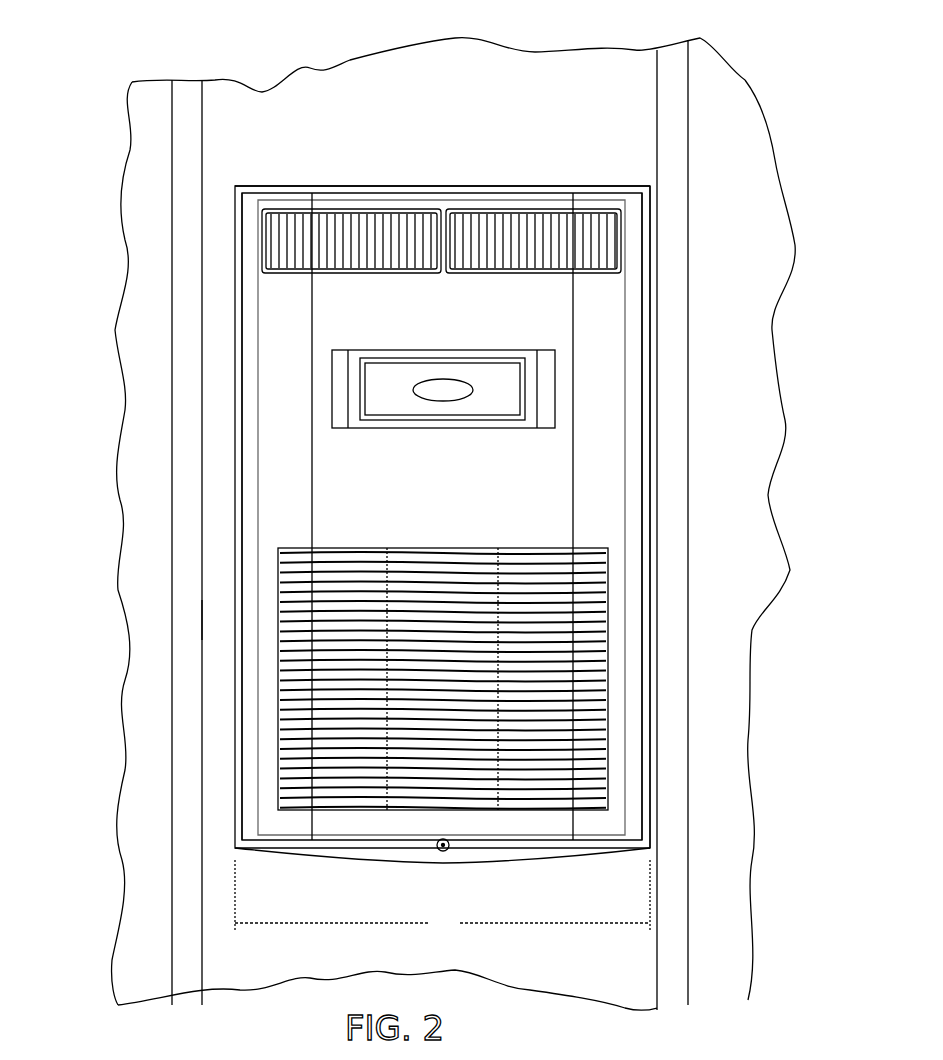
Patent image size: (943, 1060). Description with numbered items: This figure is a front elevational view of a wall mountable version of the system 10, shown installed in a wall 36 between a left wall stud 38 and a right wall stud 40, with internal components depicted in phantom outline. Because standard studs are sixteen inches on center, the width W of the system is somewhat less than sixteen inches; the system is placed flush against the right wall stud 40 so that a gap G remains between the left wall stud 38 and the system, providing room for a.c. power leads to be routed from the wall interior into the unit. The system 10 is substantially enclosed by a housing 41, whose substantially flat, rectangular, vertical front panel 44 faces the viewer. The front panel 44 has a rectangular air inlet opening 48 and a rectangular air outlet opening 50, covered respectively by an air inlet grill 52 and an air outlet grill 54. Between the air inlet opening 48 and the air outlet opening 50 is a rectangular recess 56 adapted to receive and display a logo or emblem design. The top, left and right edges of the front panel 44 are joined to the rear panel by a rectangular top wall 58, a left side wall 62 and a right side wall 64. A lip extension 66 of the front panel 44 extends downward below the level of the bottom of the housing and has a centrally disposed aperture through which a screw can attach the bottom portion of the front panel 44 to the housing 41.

The system 10 is at (328, 130).
The wall 36 is at (446, 128).
The left wall stud 38 is at (190, 118).
The right wall stud 40 is at (674, 84).
The housing 41 is at (512, 180).
The front panel 44 is at (446, 299).
The air inlet opening 48 is at (450, 750).
The air outlet opening 50 is at (262, 232).
The air inlet grill 52 is at (445, 705).
The air outlet grill 54 is at (355, 260).
The rectangular recess 56 is at (400, 386).
The top wall 58 is at (305, 195).
The left side wall 62 is at (232, 465).
The right side wall 64 is at (640, 576).
The lip extension 66 is at (400, 848).
The gap G is at (185, 618).
The width W is at (442, 897).